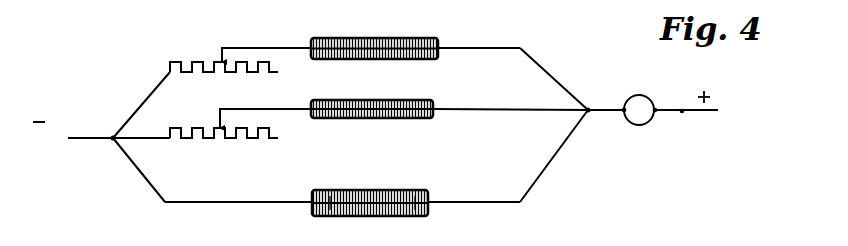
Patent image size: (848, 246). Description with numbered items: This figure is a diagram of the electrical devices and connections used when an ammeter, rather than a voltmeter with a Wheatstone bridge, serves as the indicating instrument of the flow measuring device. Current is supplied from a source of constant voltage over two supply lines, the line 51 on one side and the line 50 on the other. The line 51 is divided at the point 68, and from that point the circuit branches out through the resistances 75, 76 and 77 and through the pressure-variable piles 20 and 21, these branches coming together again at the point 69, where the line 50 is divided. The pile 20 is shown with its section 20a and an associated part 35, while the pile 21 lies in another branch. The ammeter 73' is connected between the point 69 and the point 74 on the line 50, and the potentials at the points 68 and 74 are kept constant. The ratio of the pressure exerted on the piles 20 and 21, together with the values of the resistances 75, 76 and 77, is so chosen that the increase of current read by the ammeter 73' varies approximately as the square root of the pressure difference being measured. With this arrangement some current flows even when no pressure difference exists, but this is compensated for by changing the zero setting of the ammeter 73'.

The current supply line 51 is at (75, 137).
The point 68 is at (112, 133).
The resistance 76 is at (269, 73).
The resistance 75 is at (232, 139).
The resistance 77 is at (360, 38).
The pile 21 is at (385, 100).
The pile 20 is at (392, 217).
The resistance element section 20a is at (342, 221).
The resistance element section 35 is at (442, 221).
The point 69 is at (580, 116).
The ammeter 73' is at (640, 97).
The point 74 is at (682, 113).
The current supply line 50 is at (718, 110).